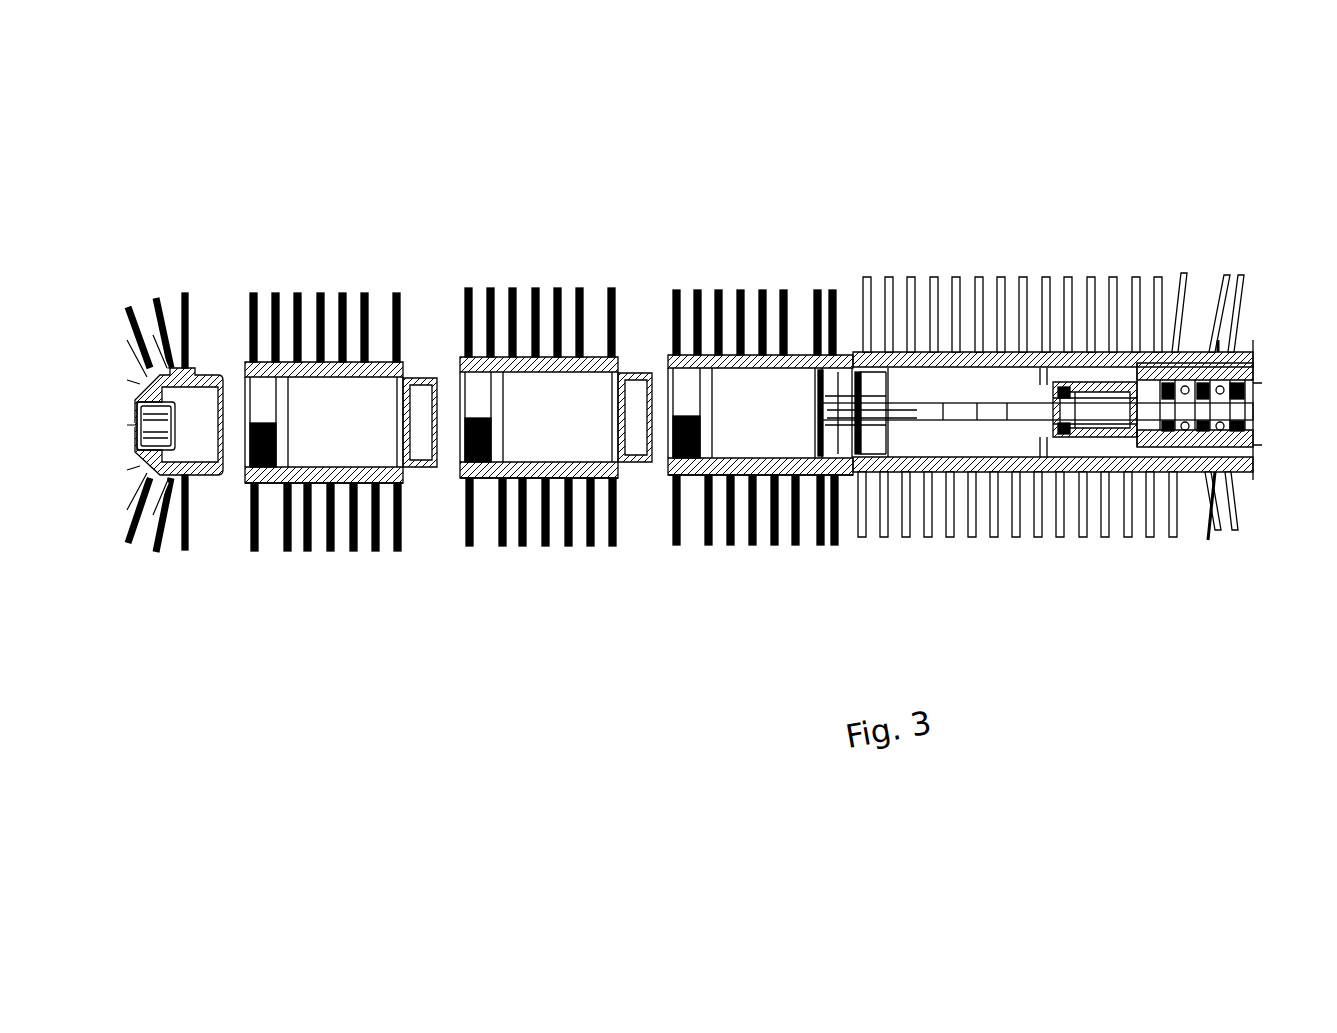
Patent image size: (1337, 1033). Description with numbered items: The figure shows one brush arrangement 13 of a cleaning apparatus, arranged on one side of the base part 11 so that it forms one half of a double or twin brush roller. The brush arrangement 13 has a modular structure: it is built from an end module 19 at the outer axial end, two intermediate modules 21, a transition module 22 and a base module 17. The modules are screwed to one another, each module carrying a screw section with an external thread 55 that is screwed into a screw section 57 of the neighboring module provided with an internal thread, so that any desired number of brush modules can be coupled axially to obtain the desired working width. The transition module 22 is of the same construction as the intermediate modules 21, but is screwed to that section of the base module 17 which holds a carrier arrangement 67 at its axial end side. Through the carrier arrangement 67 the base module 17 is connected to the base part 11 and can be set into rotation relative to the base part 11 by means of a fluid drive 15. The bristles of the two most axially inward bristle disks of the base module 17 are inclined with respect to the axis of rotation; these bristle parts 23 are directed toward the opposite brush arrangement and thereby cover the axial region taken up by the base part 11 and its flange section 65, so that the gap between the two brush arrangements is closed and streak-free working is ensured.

The brush arrangement 13 is at (648, 88).
The end module 19 is at (168, 227).
The intermediate module 21 is at (328, 208).
The transition module 22 is at (737, 196).
The base module 17 is at (923, 224).
The screw section 57 is at (245, 445).
The external thread 55 is at (222, 470).
The carrier arrangement 67 is at (1021, 368).
The flange section 65 is at (1237, 350).
The bristle parts 23 is at (1192, 247).
The base part 11 is at (1225, 472).
The fluid drive 15 is at (1270, 440).